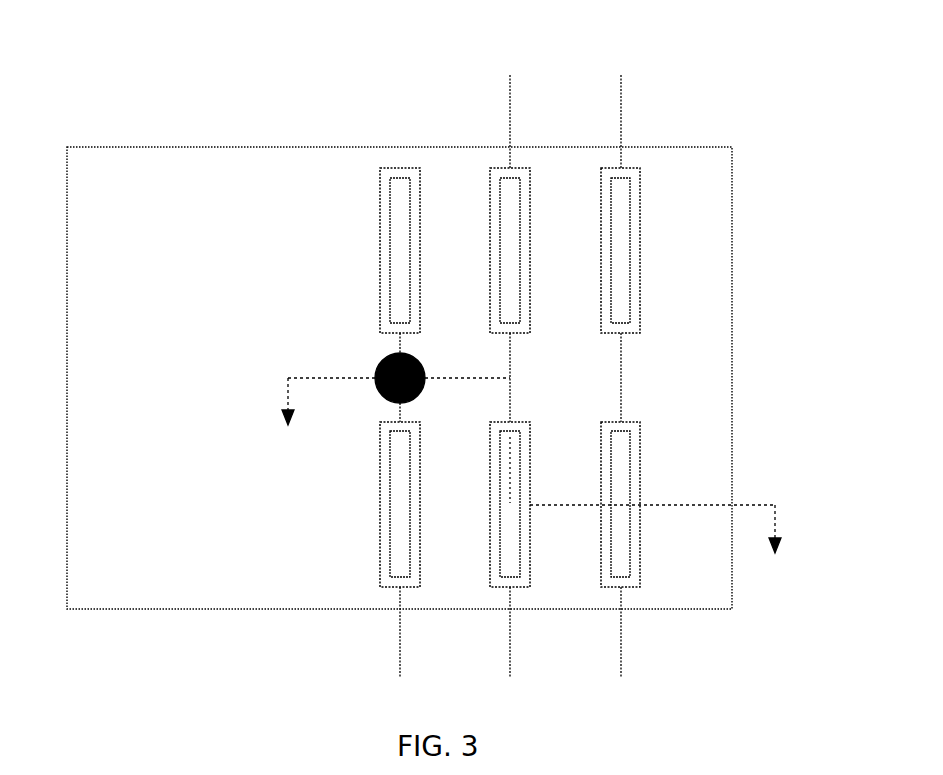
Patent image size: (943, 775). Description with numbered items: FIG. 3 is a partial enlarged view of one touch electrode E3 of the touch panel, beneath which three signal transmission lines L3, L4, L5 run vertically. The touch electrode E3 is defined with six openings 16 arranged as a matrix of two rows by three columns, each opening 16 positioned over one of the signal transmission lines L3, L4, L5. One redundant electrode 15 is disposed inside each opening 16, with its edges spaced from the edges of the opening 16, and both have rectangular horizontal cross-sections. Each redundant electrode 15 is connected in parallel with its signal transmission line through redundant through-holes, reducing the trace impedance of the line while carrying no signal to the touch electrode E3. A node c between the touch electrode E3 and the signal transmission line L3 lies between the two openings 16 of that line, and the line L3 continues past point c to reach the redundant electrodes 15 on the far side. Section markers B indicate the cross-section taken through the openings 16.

The redundant electrode 15 is at (621, 272).
The opening 16 is at (631, 182).
The touch electrode E3 is at (128, 322).
The signal transmission line L3 is at (382, 505).
The signal transmission line L4 is at (493, 376).
The signal transmission line L5 is at (605, 376).
The section line B- B is at (532, 482).
The node c is at (392, 378).